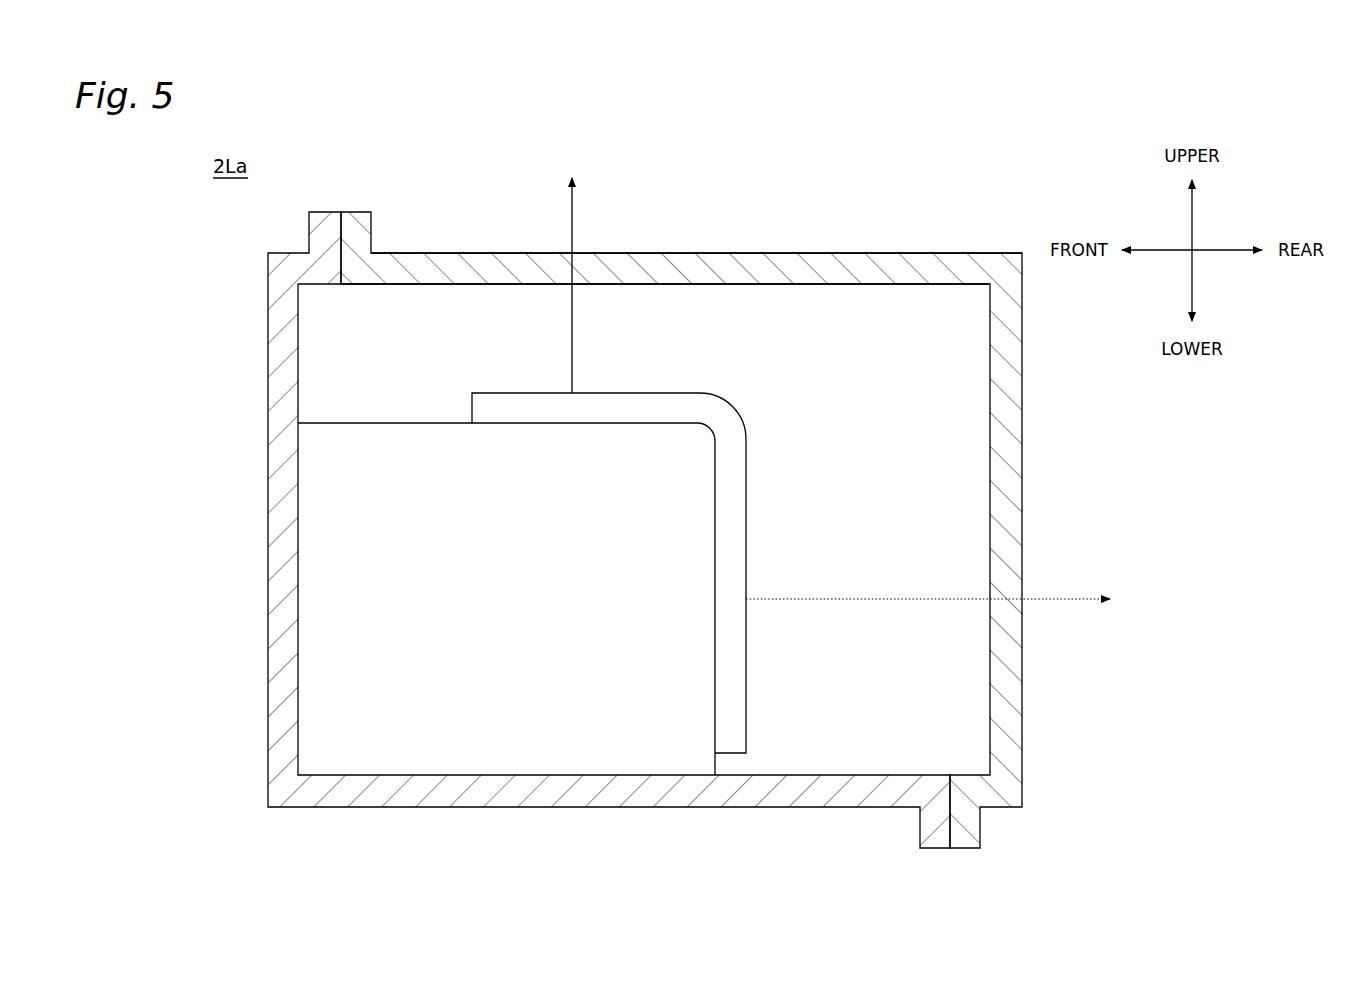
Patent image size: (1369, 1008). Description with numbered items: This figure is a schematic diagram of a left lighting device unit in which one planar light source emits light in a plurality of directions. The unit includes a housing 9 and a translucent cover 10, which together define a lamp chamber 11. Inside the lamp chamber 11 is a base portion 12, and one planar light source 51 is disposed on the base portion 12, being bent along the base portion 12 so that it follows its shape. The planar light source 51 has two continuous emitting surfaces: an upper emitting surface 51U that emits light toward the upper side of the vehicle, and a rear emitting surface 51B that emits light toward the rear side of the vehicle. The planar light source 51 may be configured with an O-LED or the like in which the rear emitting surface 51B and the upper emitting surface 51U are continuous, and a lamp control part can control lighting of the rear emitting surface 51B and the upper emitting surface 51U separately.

The housing 9 is at (272, 483).
The translucent cover 10 is at (672, 266).
The lamp chamber 11 is at (750, 306).
The base portion 12 is at (501, 611).
The planar light source 51 is at (800, 407).
The upper emitting surface 51U is at (527, 404).
The rear emitting surface 51B is at (737, 692).